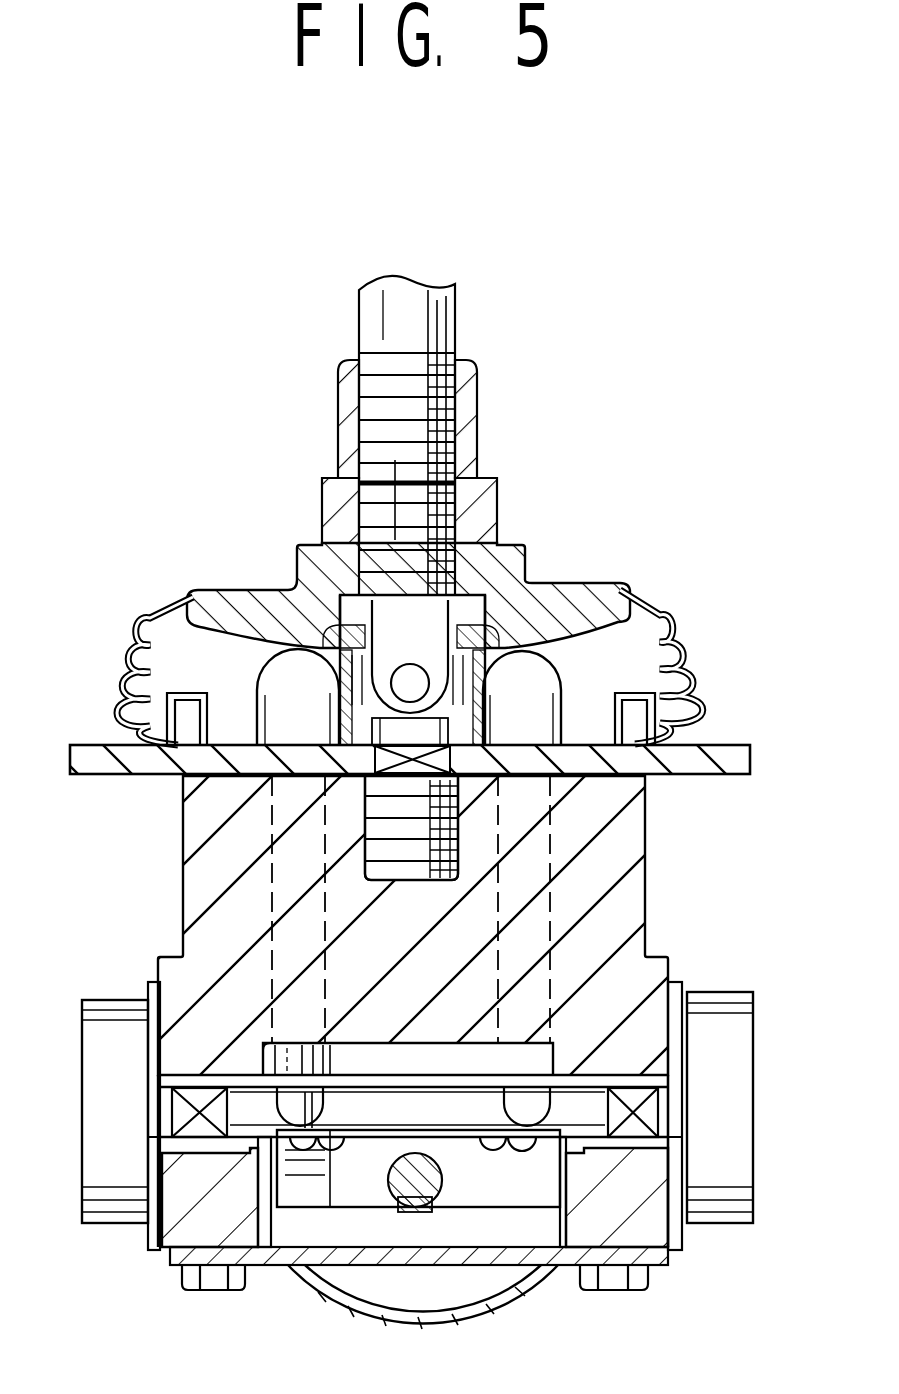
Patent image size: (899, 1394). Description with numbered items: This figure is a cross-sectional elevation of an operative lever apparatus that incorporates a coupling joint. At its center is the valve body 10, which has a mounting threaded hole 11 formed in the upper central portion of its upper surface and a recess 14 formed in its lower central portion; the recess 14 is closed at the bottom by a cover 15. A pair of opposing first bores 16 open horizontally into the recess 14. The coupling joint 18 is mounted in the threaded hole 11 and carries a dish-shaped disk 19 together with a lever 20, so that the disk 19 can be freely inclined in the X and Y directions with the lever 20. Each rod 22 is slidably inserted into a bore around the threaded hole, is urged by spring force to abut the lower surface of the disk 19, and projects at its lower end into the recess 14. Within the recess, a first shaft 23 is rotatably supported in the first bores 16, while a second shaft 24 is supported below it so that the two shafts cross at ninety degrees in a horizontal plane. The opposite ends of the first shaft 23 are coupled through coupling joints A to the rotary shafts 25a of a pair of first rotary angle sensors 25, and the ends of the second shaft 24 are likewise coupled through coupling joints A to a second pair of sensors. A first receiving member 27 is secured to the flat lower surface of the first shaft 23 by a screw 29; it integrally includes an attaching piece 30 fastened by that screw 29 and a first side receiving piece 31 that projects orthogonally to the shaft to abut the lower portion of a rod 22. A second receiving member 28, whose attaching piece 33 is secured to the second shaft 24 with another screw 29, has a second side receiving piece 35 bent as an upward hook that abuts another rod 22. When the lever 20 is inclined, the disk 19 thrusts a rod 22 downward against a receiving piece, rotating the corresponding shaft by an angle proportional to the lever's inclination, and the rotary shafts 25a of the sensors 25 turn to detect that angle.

The valve body 10 is at (630, 853).
The mounting threaded hole 11 is at (365, 840).
The recess 14 is at (567, 1188).
The cover 15 is at (650, 1255).
The first bores 16 is at (160, 1080).
The coupling joint 18 is at (478, 690).
The dish-shaped disk 19 is at (553, 590).
The lever 20 is at (462, 318).
The rod 22 is at (265, 678).
The first shaft 23 is at (588, 1120).
The second shaft 24 is at (440, 1178).
The first rotary angle sensors 25 is at (100, 1105).
The rotary shafts 25a is at (160, 1115).
The first receiving member 27 is at (427, 1105).
The second receiving member 28 is at (423, 1288).
The screw 29 is at (320, 1132).
The attaching piece 30 is at (397, 1105).
The first side receiving piece 31 is at (323, 1105).
The attaching piece 33 is at (400, 1212).
The second side receiving piece 35 is at (285, 1172).
The coupling joints A is at (195, 1100).